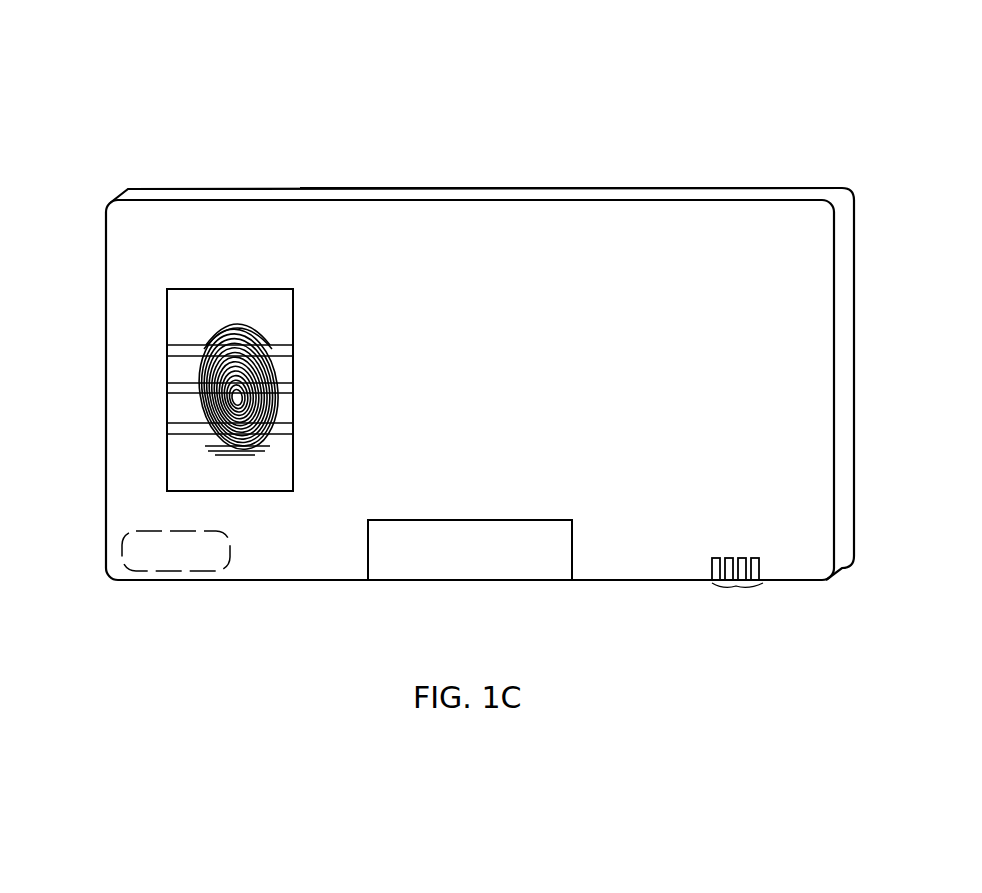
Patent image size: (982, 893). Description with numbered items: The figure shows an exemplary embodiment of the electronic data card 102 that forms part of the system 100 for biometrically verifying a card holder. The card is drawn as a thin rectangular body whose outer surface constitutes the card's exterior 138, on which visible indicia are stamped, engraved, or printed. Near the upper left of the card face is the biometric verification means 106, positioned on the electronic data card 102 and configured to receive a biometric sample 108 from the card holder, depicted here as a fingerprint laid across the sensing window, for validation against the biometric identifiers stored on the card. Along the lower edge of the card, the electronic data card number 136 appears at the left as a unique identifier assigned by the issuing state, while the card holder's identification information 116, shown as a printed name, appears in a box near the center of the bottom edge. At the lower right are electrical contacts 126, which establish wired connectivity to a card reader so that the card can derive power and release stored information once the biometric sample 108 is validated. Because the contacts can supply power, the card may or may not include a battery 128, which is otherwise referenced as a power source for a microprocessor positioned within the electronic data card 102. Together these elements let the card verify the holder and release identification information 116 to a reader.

The system 100 is at (189, 128).
The electronic data card 102 is at (888, 464).
The biometric verification means 106 is at (293, 325).
The biometric sample 108 is at (197, 378).
The identification information 116 is at (557, 572).
The electrical contacts 126 is at (736, 586).
The battery 128 is at (855, 248).
The electronic data card number 136 is at (170, 568).
The card's exterior 138 is at (532, 188).